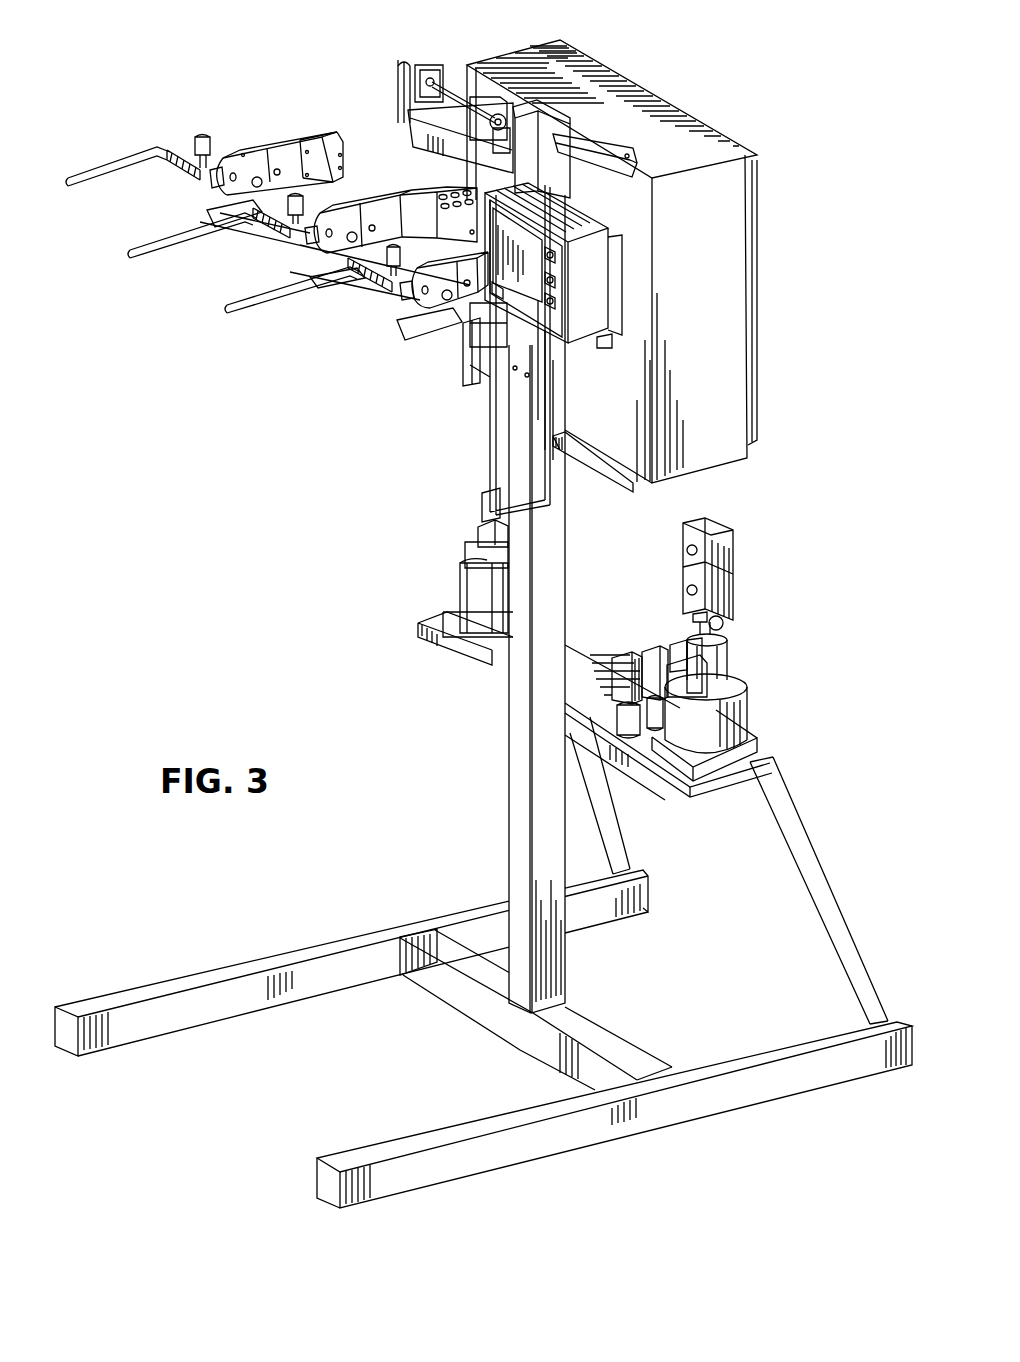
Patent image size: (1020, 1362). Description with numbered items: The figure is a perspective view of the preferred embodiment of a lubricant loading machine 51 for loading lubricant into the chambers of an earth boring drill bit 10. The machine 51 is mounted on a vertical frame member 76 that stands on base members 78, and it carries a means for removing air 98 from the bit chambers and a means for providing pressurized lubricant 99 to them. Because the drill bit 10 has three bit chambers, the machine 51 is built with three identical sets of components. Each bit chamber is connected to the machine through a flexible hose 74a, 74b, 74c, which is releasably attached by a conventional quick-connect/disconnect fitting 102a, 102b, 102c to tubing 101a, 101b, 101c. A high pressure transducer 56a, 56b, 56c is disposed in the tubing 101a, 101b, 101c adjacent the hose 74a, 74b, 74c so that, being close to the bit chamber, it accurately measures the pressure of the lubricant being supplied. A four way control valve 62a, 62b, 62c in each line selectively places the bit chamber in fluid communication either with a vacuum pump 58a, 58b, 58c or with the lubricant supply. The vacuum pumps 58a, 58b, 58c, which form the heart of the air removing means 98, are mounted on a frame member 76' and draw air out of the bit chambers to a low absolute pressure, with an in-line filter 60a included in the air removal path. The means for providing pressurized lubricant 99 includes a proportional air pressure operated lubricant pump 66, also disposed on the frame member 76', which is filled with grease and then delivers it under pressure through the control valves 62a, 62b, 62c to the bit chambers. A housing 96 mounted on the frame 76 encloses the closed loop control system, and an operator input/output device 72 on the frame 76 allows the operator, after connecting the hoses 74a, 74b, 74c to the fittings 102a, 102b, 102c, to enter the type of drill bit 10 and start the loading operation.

The drill bit 10 is at (247, 80).
The lubricant loading machine 51 is at (366, 655).
The high pressure transducer 56a is at (213, 143).
The high pressure transducer 56b is at (343, 183).
The high pressure transducer 56c is at (395, 300).
The vacuum pump 58a is at (673, 647).
The vacuum pump 58b is at (652, 648).
The vacuum pump 58c is at (613, 655).
The in-line filter 60a is at (500, 600).
The four way control valve 62a is at (305, 142).
The four way control valve 62b is at (393, 200).
The four way control valve 62c is at (477, 323).
The proportional air pressure operated lubricant pump 66 is at (720, 663).
The operator input/output device 72 is at (582, 227).
The flexible hose 74a is at (105, 163).
The flexible hose 74b is at (147, 253).
The flexible hose 74c is at (233, 307).
The vertical frame member 76 is at (493, 604).
The frame member 76' is at (819, 871).
The base members 78 is at (262, 953).
The housing 96 is at (742, 342).
The means for removing air 98 is at (650, 543).
The means for providing pressurized lubricant 99 is at (760, 707).
The tubing 101a is at (198, 180).
The tubing 101b is at (293, 230).
The tubing 101c is at (380, 310).
The quick-connect/disconnect fitting 102a is at (182, 148).
The quick-connect/disconnect fitting 102b is at (262, 222).
The quick-connect/disconnect fitting 102c is at (368, 290).